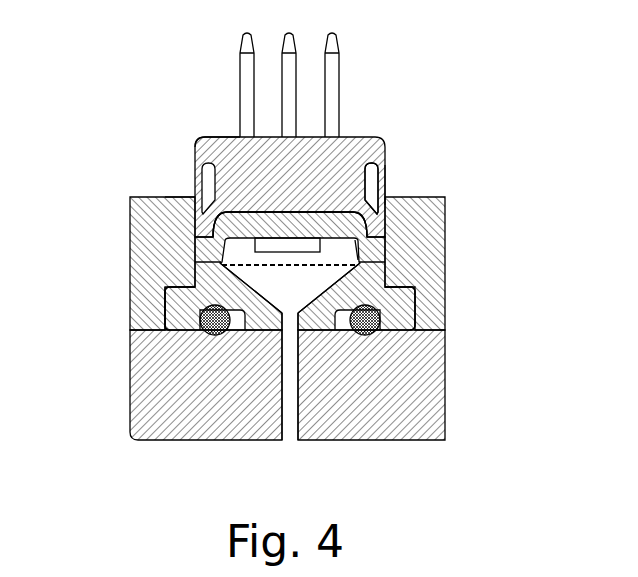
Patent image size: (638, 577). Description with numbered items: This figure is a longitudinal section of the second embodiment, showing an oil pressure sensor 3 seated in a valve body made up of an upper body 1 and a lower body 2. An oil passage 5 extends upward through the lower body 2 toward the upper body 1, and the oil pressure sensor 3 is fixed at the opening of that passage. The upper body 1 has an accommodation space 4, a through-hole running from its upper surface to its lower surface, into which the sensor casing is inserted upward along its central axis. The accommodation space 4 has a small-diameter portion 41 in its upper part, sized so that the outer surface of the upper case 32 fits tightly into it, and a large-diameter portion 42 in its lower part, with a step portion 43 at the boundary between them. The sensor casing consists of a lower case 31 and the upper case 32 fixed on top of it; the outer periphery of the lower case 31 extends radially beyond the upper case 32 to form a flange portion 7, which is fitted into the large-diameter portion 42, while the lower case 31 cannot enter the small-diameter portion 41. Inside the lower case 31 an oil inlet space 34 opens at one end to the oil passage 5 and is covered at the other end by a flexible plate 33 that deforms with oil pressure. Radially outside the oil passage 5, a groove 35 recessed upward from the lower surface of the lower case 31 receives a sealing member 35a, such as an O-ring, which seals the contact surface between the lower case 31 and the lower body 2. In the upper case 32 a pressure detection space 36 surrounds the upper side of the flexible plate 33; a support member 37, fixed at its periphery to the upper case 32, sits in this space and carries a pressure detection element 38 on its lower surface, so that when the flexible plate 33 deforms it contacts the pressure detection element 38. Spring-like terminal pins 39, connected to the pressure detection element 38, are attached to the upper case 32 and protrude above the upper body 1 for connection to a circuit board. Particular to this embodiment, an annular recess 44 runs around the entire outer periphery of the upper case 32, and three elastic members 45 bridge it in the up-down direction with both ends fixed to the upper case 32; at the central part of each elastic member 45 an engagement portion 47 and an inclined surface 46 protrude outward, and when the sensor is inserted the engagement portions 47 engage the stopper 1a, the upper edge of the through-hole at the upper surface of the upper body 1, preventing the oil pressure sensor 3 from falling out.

The upper body 1 is at (163, 233).
The stopper 1a is at (387, 220).
The lower body 2 is at (150, 377).
The oil pressure sensor 3 is at (268, 160).
The accommodation space 4 is at (385, 272).
The oil passage 5 is at (288, 438).
The flange portion 7 is at (170, 297).
The lower case 31 is at (372, 293).
The upper case 32 is at (237, 163).
The flexible plate 33 is at (253, 263).
The oil inlet space 34 is at (318, 283).
The groove 35 is at (342, 322).
The sealing member 35a is at (220, 325).
The pressure detection space 36 is at (335, 253).
The support member 37 is at (248, 223).
The pressure detection element 38 is at (287, 245).
The terminal pins 39 is at (335, 92).
The small-diameter portion 41 is at (182, 213).
The large-diameter portion 42 is at (163, 312).
The step portion 43 is at (178, 265).
The annular recess 44 is at (367, 170).
The elastic members 45 is at (383, 172).
The inclined surface 46 is at (388, 185).
The engagement portion 47 is at (385, 197).